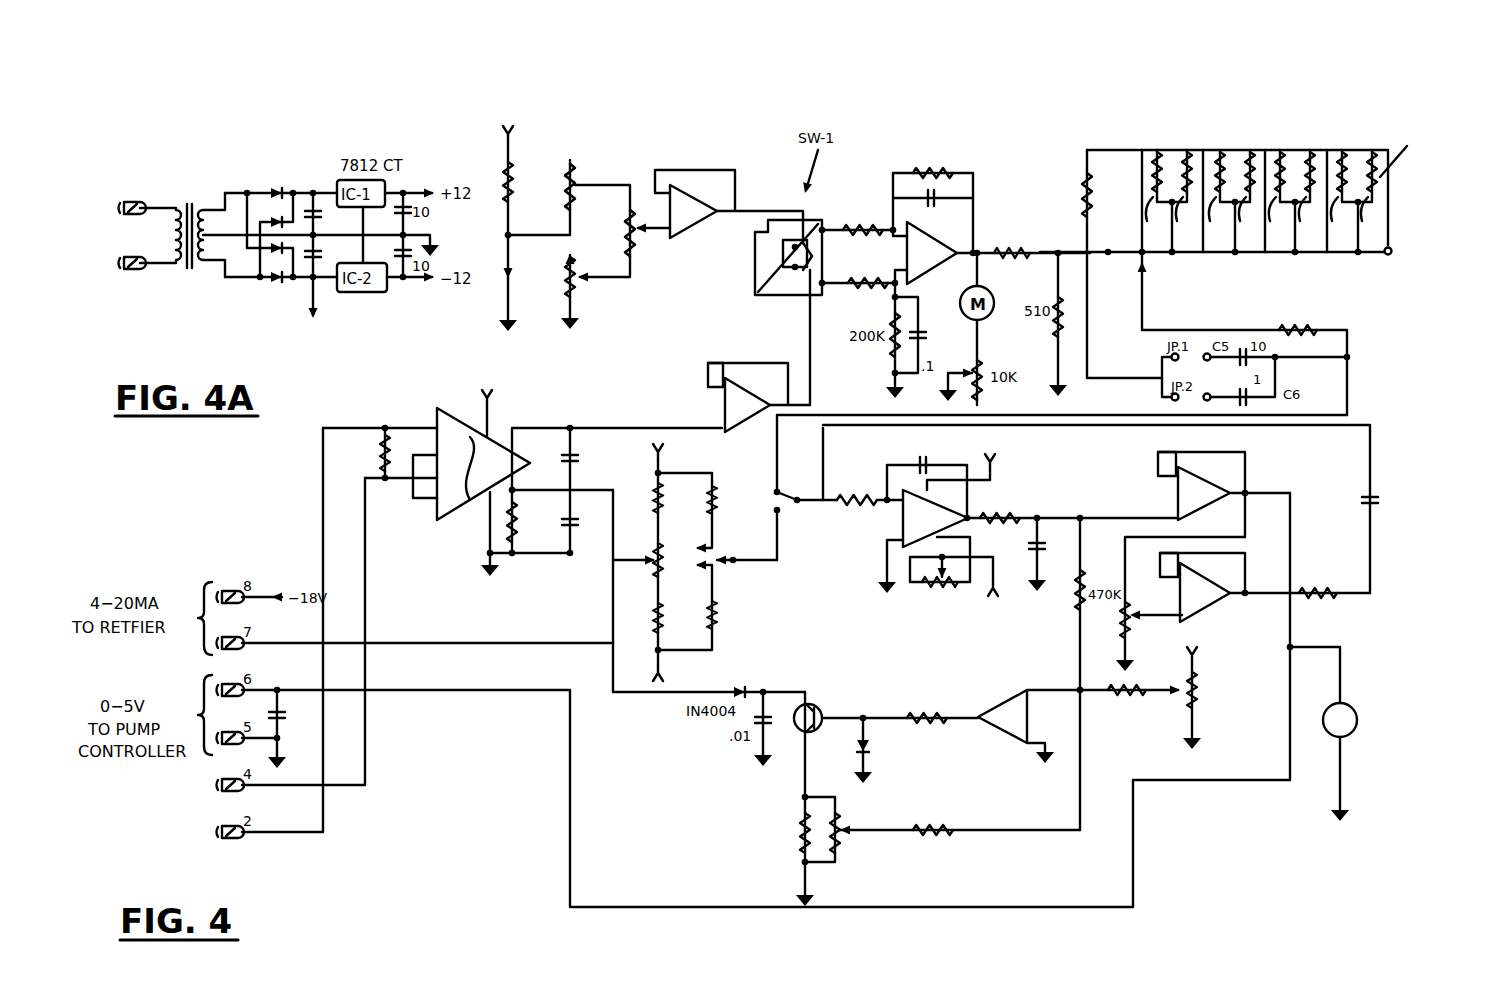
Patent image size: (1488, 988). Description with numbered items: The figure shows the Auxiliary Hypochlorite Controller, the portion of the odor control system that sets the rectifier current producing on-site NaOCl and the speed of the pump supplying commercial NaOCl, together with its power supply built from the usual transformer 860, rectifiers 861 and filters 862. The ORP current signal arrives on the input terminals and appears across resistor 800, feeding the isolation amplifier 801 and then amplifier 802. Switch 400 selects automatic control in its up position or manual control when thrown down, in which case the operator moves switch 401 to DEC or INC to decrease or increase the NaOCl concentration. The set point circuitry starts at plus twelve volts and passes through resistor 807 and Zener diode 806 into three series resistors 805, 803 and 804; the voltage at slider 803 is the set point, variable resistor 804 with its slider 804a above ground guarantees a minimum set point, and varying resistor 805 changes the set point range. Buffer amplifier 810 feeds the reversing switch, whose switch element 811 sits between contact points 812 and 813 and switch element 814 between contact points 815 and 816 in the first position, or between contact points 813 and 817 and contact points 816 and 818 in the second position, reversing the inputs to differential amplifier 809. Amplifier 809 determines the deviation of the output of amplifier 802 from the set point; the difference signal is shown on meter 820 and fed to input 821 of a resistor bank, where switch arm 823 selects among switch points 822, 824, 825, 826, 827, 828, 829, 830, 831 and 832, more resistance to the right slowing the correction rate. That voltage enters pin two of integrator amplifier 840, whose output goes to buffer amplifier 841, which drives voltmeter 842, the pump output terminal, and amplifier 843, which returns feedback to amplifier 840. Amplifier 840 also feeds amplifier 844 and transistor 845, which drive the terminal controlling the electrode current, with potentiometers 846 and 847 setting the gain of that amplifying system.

In FIG. 4, the switch 400 is at (790, 515).
In FIG. 4, the switch 401 is at (729, 571).
In FIG. 4, the resistor 800 is at (383, 432).
In FIG. 4, the amplifier 801 is at (438, 508).
In FIG. 4, the amplifier 802 is at (724, 405).
In FIG. 4A, the resistor 803 is at (638, 206).
In FIG. 4A, the variable resistor 804 is at (563, 298).
In FIG. 4A, the slider 804a is at (608, 280).
In FIG. 4A, the resistor 805 is at (577, 160).
In FIG. 4A, the Zener diode 806 is at (504, 274).
In FIG. 4A, the resistor 807 is at (504, 188).
In FIG. 4A, the differential amplifier 809 is at (962, 272).
In FIG. 4A, the amplifier 810 is at (694, 187).
In FIG. 4A, the switch element 811 is at (768, 252).
In FIG. 4A, the contact point 812 is at (725, 240).
In FIG. 4A, the contact point 813 is at (803, 243).
In FIG. 4A, the switch element 814 is at (793, 302).
In FIG. 4A, the contact point 815 is at (773, 294).
In FIG. 4A, the contact point 816 is at (814, 277).
In FIG. 4A, the contact point 817 is at (828, 230).
In FIG. 4A, the contact point 818 is at (828, 267).
In FIG. 4A, the meter 820 is at (942, 337).
In FIG. 4A, the input 821 is at (1088, 247).
In FIG. 4A, the switch point 822 is at (1108, 249).
In FIG. 4A, the switch arm 823 is at (1141, 286).
In FIG. 4A, the switch point 824 is at (1142, 248).
In FIG. 4A, the switch point 825 is at (1172, 254).
In FIG. 4A, the switch point 826 is at (1204, 254).
In FIG. 4A, the switch point 827 is at (1235, 253).
In FIG. 4A, the switch point 828 is at (1265, 252).
In FIG. 4A, the switch point 829 is at (1295, 252).
In FIG. 4A, the switch point 830 is at (1327, 252).
In FIG. 4A, the switch point 831 is at (1358, 250).
In FIG. 4A, the switch point 832 is at (1417, 243).
In FIG. 4, the integrator amplifier 840 is at (898, 514).
In FIG. 4, the buffer amplifier 841 is at (1246, 476).
In FIG. 4, the voltmeter 842 is at (1356, 705).
In FIG. 4, the amplifier 843 is at (1212, 607).
In FIG. 4, the amplifier 844 is at (1000, 703).
In FIG. 4, the transistor 845 is at (822, 710).
In FIG. 4, the potentiometer 846 is at (848, 818).
In FIG. 4, the potentiometer 847 is at (1202, 704).
In FIG. 4A, the transformer 860 is at (190, 200).
In FIG. 4A, the rectifiers 861 is at (276, 180).
In FIG. 4A, the filters 862 is at (322, 178).